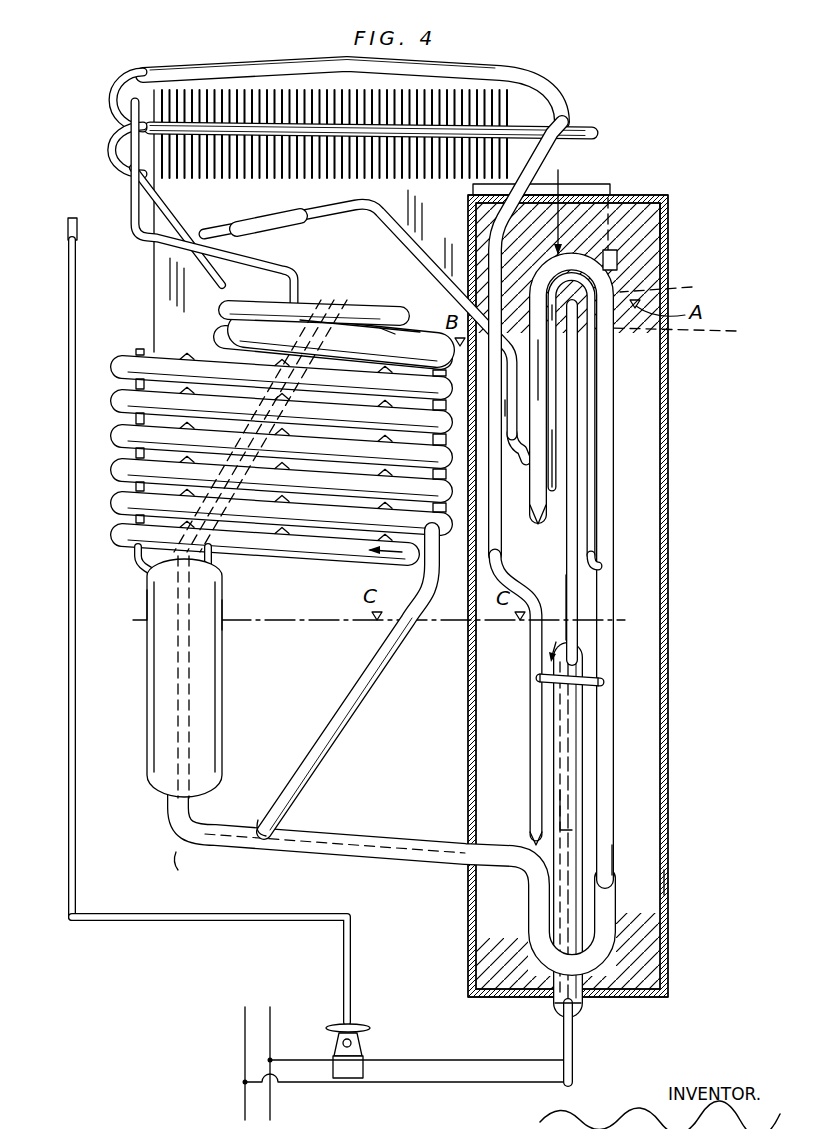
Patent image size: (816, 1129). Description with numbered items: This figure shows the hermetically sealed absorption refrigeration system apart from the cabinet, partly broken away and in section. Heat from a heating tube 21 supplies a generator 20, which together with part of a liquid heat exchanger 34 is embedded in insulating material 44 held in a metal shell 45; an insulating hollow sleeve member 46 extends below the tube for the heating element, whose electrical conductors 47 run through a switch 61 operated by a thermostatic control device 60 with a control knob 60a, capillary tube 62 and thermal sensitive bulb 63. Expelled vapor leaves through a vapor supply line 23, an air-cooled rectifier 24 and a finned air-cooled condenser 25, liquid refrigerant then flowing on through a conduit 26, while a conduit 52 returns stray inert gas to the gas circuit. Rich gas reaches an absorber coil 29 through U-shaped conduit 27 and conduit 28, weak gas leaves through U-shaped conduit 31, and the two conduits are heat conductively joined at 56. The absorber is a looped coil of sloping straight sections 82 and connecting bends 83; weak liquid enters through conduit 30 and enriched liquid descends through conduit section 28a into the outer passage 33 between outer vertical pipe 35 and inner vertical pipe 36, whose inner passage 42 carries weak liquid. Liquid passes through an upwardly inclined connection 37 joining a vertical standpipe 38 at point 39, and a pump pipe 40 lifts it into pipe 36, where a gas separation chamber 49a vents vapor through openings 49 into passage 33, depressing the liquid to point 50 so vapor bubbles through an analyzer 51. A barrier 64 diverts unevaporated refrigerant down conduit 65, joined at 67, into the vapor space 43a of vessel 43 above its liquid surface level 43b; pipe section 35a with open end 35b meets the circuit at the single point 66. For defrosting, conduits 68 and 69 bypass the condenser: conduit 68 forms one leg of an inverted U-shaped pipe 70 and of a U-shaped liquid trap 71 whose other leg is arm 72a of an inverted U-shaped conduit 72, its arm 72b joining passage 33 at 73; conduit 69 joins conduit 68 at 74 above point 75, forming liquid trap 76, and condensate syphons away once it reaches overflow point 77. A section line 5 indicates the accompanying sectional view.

The section line 5— 5 is at (582, 625).
The generator 20 is at (668, 195).
The heating tube 21 is at (555, 706).
The vapor supply line 23 is at (560, 150).
The air-cooled rectifier 24 is at (517, 72).
The air-cooled condenser 25 is at (600, 133).
The conduit 26 is at (112, 152).
The U-shaped conduit 27 is at (348, 332).
The conduit 28 is at (438, 470).
The conduit section 28a is at (386, 682).
The absorber coil 29 is at (112, 364).
The conduit 30 is at (318, 334).
The U-shaped conduit 31 is at (212, 340).
The outer passage 33 is at (617, 719).
The liquid heat exchanger 34 is at (622, 860).
The outer vertical pipe 35 is at (600, 820).
The pipe section 35a is at (184, 860).
The open end 35b is at (214, 683).
The inner vertical pipe 36 is at (630, 256).
The upwardly inclined connection 37 is at (600, 688).
The vertical standpipe 38 is at (529, 642).
The connection point 39 is at (538, 678).
The pump pipe 40 is at (566, 578).
The inner passage 42 is at (338, 852).
The vessel 43 is at (147, 714).
The vapor space 43a is at (146, 600).
The liquid surface level 43b is at (224, 615).
The insulating material 44 is at (665, 220).
The metal shell 45 is at (666, 882).
The hollow sleeve member 46 is at (570, 898).
The electrical conductors 47 is at (515, 1080).
The openings 49 is at (668, 287).
The gas separation chamber 49a is at (690, 331).
The liquid level point 50 is at (606, 682).
The analyzer 51 is at (557, 641).
The conduit 52 is at (131, 206).
The heat conductive connection 56 is at (218, 312).
The control device 60 is at (371, 1026).
The control knob 60a is at (340, 1045).
The switch 61 is at (345, 1079).
The capillary tube 62 is at (148, 912).
The thermal sensitive bulb 63 is at (66, 230).
The barrier 64 is at (412, 334).
The conduit 65 is at (215, 566).
The connection point 66 is at (262, 828).
The connection point 67 is at (386, 334).
The conduit 68 is at (520, 283).
The conduit 69 is at (301, 218).
The inverted U-shaped pipe 70 is at (560, 176).
The U-shaped liquid trap 71 is at (580, 380).
The inverted U-shaped conduit 72 is at (600, 315).
The arm 72a is at (556, 455).
The arm 72b is at (595, 415).
The connection point 73 is at (600, 567).
The connection point 74 is at (521, 455).
The connection point 75 is at (544, 509).
The liquid trap 76 is at (505, 408).
The overflow point 77 is at (548, 312).
The straight sections 82 is at (347, 566).
The connecting bends 83 is at (106, 474).